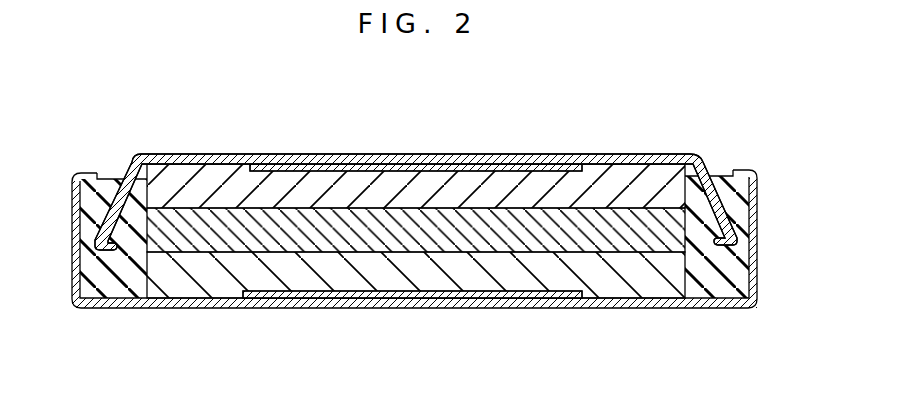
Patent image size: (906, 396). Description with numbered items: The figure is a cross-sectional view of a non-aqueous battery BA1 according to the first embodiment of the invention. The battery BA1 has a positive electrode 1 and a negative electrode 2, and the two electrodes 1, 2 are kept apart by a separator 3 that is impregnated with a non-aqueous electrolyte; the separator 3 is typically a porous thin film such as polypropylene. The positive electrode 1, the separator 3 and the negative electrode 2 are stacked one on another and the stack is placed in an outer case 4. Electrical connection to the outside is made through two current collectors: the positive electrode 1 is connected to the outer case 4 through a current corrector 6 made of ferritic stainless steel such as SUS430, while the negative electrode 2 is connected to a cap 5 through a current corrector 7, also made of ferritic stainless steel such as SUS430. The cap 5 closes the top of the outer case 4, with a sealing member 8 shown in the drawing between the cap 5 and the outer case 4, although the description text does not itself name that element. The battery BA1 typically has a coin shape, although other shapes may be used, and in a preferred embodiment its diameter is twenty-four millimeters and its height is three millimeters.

The positive electrode 1 is at (293, 275).
The negative electrode 2 is at (388, 185).
The separator 3 is at (190, 242).
The outer case 4 is at (687, 302).
The cap 5 is at (174, 157).
The current corrector 6 is at (518, 307).
The current corrector 7 is at (497, 153).
The gasket 8 is at (738, 193).
The battery BA1 is at (625, 122).